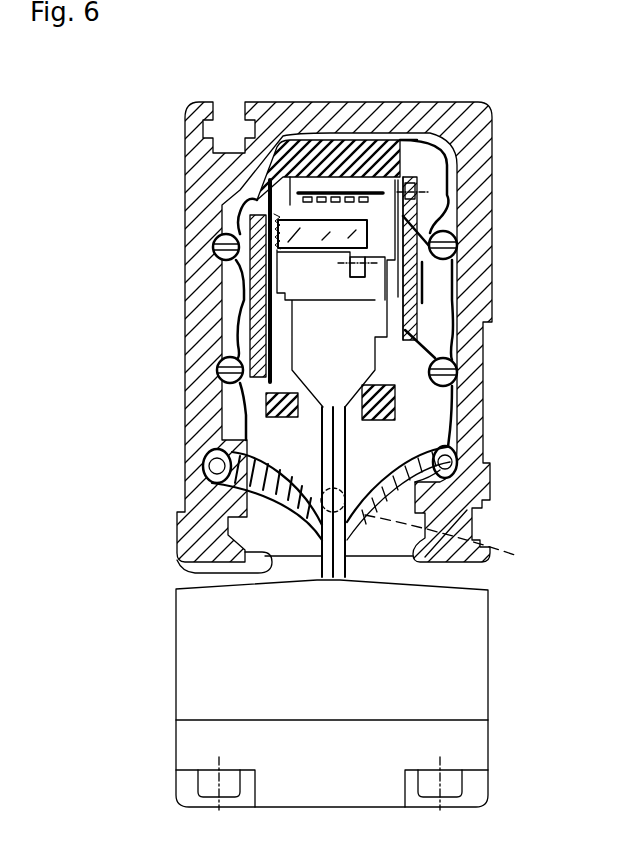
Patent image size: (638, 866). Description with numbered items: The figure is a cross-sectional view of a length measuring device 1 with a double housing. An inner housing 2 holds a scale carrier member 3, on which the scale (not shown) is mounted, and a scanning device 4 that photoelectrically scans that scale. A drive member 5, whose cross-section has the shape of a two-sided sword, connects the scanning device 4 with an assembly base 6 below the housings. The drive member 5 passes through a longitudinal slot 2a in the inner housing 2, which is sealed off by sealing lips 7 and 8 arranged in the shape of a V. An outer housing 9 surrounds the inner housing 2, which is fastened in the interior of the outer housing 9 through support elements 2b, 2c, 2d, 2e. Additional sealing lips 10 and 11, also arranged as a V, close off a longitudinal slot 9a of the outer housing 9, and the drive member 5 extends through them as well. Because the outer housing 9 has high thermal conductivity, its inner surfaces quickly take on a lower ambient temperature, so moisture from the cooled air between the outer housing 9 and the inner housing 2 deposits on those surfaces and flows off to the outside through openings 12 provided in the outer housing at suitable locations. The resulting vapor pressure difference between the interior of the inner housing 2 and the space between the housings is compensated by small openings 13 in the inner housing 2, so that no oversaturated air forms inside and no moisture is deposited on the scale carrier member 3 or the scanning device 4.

The length measuring device 1 is at (168, 582).
The inner housing 2 is at (302, 152).
The longitudinal slot 2a is at (222, 433).
The support element 2b is at (220, 362).
The support element 2c is at (222, 262).
The support element 2d is at (456, 236).
The support element 2e is at (455, 353).
The scale carrier member 3 is at (278, 227).
The scanning device 4 is at (308, 273).
The drive member 5 is at (247, 490).
The assembly base 6 is at (346, 665).
The sealing lip 7 is at (266, 399).
The sealing lip 8 is at (398, 412).
The outer housing 9 is at (340, 128).
The longitudinal slot 9a is at (245, 573).
The sealing lip 10 is at (228, 518).
The sealing lip 11 is at (470, 507).
The openings 12 is at (456, 540).
The small openings 13 is at (450, 182).